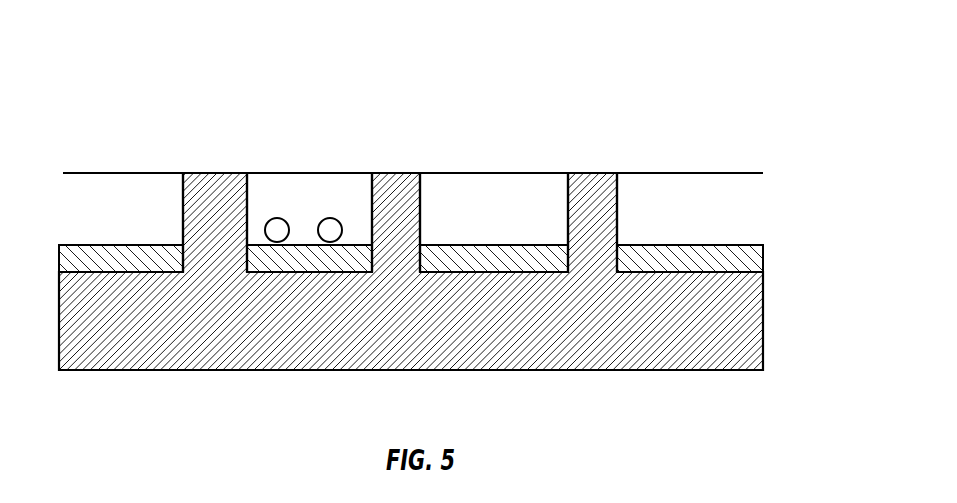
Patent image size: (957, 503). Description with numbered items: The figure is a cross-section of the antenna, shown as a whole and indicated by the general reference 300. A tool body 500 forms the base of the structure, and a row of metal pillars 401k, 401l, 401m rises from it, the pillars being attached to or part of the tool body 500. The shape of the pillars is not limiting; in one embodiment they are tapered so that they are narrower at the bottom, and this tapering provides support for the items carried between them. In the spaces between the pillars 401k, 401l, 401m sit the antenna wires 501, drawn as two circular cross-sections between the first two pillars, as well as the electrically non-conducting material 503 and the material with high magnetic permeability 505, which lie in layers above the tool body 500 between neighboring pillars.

The capacitor structure 300 is at (152, 96).
The tool body 500 is at (272, 357).
The metal pillar 401k is at (217, 172).
The metal pillar 401l is at (395, 172).
The metal pillar 401m is at (580, 172).
The antenna wires 501 is at (331, 218).
The electrically non-conducting material 503 is at (482, 192).
The material with high magnetic permeability 505 is at (743, 245).